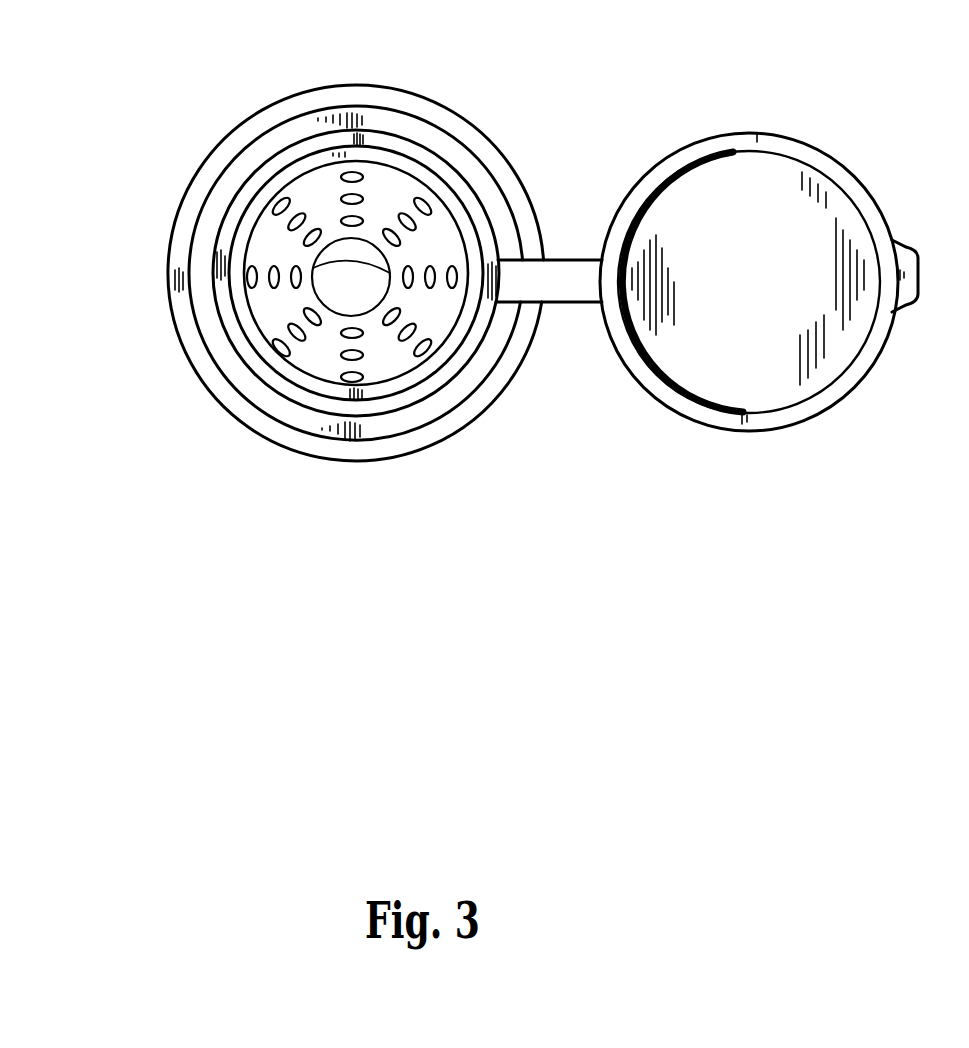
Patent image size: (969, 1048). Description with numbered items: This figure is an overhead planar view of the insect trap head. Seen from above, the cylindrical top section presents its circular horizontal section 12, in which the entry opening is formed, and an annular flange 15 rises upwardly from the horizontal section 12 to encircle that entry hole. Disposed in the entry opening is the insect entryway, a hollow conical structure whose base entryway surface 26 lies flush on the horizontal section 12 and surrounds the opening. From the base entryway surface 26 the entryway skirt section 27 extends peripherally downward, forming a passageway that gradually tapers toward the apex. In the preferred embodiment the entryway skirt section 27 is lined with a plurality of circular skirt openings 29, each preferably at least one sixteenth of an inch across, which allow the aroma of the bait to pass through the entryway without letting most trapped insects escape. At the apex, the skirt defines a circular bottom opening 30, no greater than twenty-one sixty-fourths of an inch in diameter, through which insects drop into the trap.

The circular horizontal section 12 is at (182, 288).
The annular flange 15 is at (233, 357).
The base entryway surface 26 is at (250, 233).
The entryway skirt section 27 is at (380, 203).
The circular skirt openings 29 is at (427, 349).
The circular bottom opening 30 is at (345, 262).